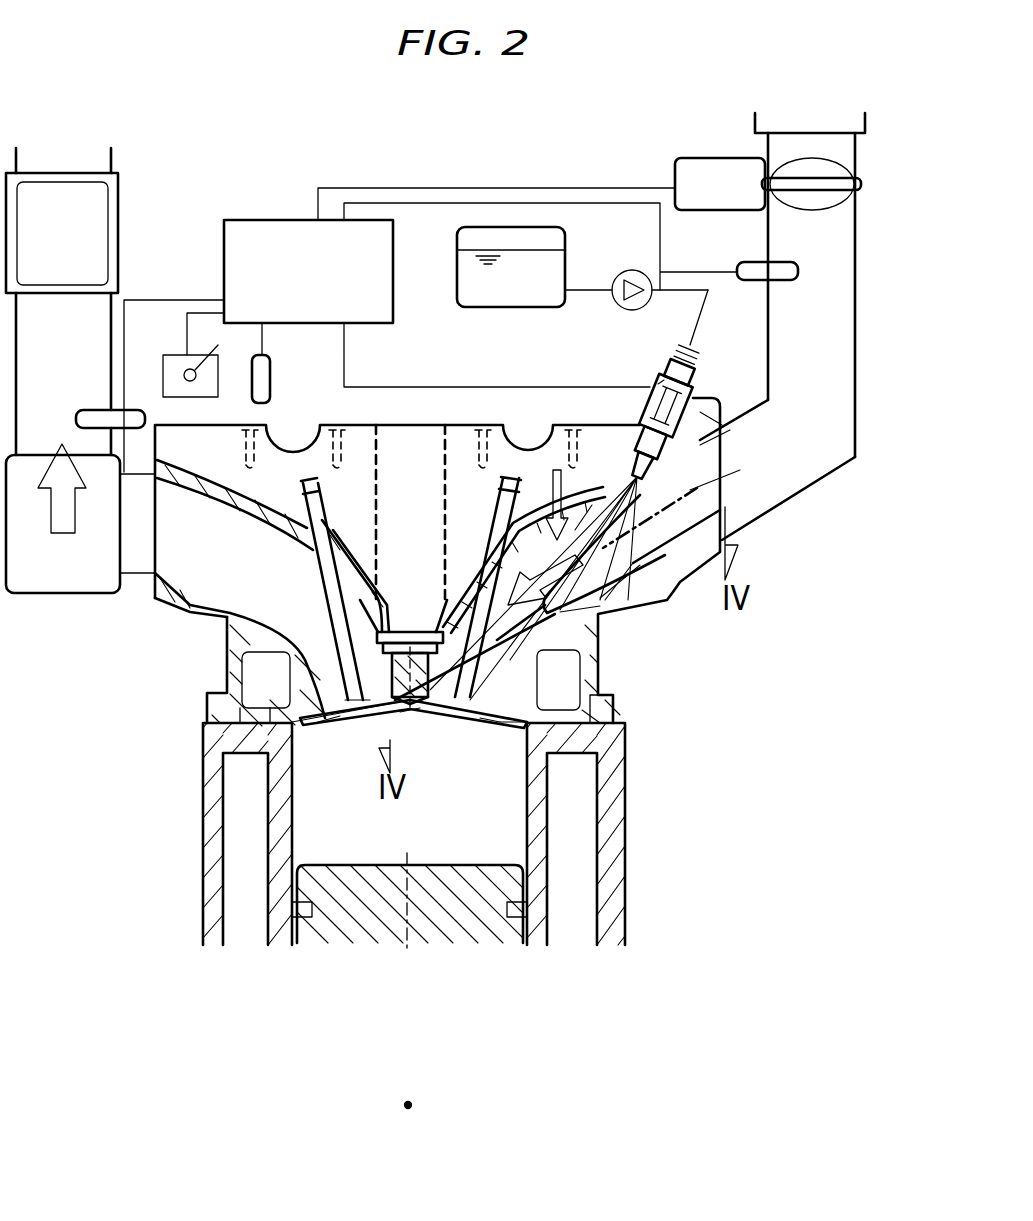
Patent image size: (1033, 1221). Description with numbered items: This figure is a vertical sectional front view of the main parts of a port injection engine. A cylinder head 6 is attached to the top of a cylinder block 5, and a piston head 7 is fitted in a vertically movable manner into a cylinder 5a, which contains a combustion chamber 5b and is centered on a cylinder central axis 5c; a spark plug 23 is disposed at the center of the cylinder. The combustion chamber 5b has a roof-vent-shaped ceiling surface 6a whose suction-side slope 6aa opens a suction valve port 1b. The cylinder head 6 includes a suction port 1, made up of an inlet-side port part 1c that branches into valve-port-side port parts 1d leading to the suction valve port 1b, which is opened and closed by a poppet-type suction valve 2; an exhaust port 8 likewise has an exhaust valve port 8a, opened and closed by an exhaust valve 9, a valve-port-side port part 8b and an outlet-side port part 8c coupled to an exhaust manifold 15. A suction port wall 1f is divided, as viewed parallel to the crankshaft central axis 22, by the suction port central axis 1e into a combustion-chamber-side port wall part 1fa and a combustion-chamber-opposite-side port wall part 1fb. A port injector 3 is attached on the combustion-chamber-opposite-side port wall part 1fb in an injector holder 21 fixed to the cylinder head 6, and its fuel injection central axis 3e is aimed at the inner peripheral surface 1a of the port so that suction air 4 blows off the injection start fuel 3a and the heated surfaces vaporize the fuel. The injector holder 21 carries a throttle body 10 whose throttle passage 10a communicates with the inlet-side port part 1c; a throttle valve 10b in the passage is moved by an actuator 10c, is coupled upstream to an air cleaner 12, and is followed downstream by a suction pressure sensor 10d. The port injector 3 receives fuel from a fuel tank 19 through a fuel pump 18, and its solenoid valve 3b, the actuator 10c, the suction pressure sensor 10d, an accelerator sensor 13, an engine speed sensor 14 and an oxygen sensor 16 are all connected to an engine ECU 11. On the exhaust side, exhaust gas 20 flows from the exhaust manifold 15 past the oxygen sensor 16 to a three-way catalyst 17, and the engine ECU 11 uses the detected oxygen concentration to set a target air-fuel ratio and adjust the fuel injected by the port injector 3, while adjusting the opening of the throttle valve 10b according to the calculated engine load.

The suction port 1 is at (565, 530).
The inner peripheral surface 1a is at (600, 598).
The suction valve port 1b is at (491, 723).
The inlet-side port part 1c is at (582, 520).
The valve-port-side port part 1d is at (452, 612).
The suction port central axis 1e is at (690, 490).
The suction port wall 1f is at (548, 468).
The combustion-chamber-side port wall part 1fa is at (622, 590).
The combustion-chamber-opposite-side port wall part 1fb is at (692, 442).
The suction valve 2 is at (456, 716).
The port injector 3 is at (710, 389).
The injection start fuel 3a is at (500, 666).
The solenoid valve 3b is at (658, 384).
The fuel injection central axis 3e is at (588, 605).
The suction air 4 is at (544, 522).
The cylinder block 5 is at (637, 811).
The cylinder 5a is at (550, 851).
The combustion chamber 5b is at (390, 847).
The cylinder central axis 5c is at (412, 946).
The cylinder head 6 is at (609, 709).
The ceiling surface 6a is at (513, 737).
The suction-side slope 6aa is at (421, 716).
The piston head 7 is at (488, 866).
The exhaust port 8 is at (220, 598).
The exhaust valve port 8a is at (327, 724).
The valve-port-side port part 8b is at (353, 613).
The outlet-side port part 8c is at (200, 505).
The exhaust valve 9 is at (362, 720).
The throttle body 10 is at (868, 266).
The throttle passage 10a is at (830, 312).
The throttle valve 10b is at (828, 196).
The actuator 10c is at (742, 162).
The suction pressure sensor 10d is at (785, 262).
The engine ECU 11 is at (262, 235).
The air cleaner 12 is at (862, 126).
The accelerator sensor 13 is at (174, 370).
The engine speed sensor 14 is at (271, 378).
The exhaust manifold 15 is at (80, 597).
The O2 sensor 16 is at (105, 415).
The three-way catalyst 17 is at (98, 218).
The fuel pump 18 is at (625, 308).
The fuel tank 19 is at (540, 308).
The exhaust gas 20 is at (52, 516).
The injector holder 21 is at (724, 400).
The crankshaft central axis 22 is at (408, 1112).
The spark plug 23 is at (410, 630).